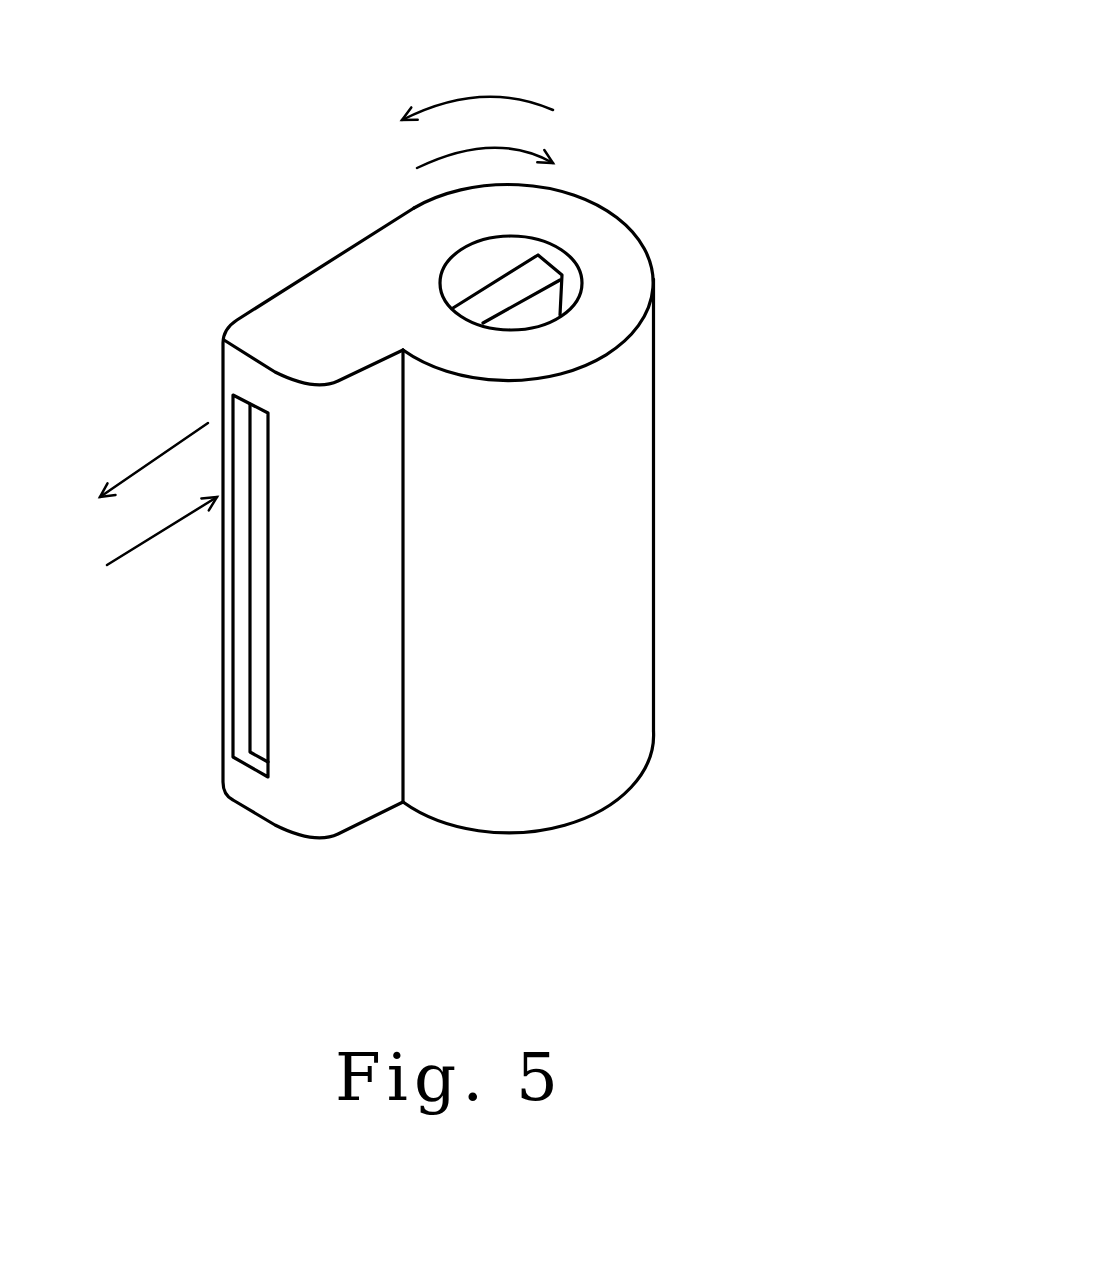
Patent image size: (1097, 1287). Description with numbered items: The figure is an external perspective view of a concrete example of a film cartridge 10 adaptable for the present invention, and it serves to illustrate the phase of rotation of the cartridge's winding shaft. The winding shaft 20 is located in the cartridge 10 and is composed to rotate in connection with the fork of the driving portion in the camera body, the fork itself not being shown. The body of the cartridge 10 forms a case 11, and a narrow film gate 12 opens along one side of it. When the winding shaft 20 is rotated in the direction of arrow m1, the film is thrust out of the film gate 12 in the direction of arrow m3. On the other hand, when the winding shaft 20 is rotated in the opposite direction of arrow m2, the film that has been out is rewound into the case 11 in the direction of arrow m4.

The cartridge 10 is at (444, 466).
The case 11 is at (650, 703).
The film gate 12 is at (250, 710).
The winding shaft 20 is at (531, 254).
The arrow m1 is at (477, 85).
The arrow m2 is at (485, 138).
The arrow m3 is at (154, 456).
The arrow m4 is at (162, 525).